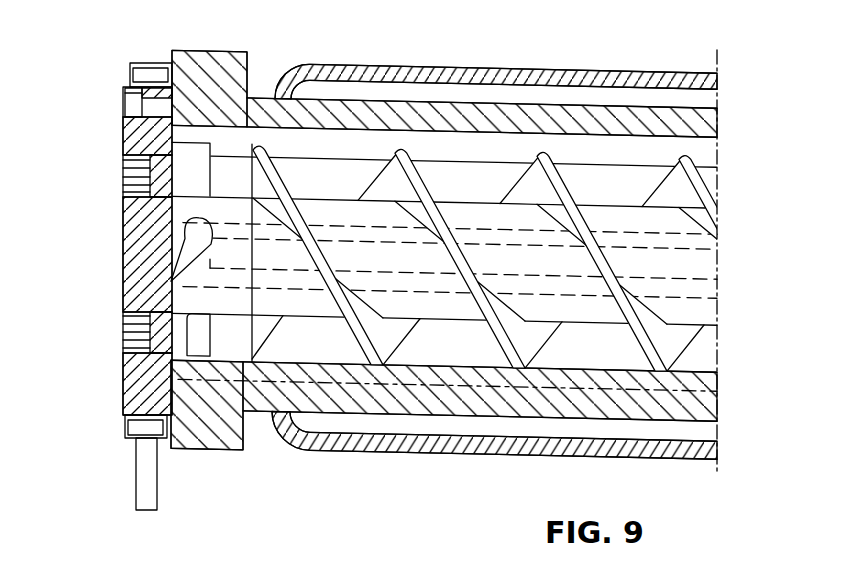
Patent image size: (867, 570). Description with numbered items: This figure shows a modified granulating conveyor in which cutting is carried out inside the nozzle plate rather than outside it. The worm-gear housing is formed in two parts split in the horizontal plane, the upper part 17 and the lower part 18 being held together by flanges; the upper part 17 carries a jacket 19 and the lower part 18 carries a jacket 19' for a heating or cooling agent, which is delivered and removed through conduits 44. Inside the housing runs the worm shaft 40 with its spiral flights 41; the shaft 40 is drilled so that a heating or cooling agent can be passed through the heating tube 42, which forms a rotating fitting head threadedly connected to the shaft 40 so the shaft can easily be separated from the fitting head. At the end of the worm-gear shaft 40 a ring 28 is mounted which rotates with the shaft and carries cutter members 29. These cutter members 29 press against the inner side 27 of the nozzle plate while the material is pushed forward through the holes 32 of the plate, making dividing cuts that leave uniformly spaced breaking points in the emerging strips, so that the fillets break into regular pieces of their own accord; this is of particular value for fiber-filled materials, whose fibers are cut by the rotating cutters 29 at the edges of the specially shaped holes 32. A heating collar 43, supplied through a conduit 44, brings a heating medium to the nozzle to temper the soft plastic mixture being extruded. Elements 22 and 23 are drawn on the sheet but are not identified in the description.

The upper part of the worm-gear housing 17 is at (227, 62).
The lower part of the worm-gear housing 18 is at (227, 400).
The jacket 19 is at (496, 67).
The jacket 19' is at (494, 464).
The lower barrel wall 22 is at (283, 380).
The barrel wall 23 is at (693, 152).
The inner side of the nozzle plate 27 is at (99, 251).
The ring 28 is at (200, 208).
The cutter members 29 is at (193, 250).
The holes in the nozzle plate 32 is at (137, 347).
The worm shaft 40 is at (700, 312).
The spiral flights 41 is at (708, 195).
The heating tube 42 is at (693, 255).
The heating collar 43 is at (142, 75).
The conduits 44 is at (147, 490).